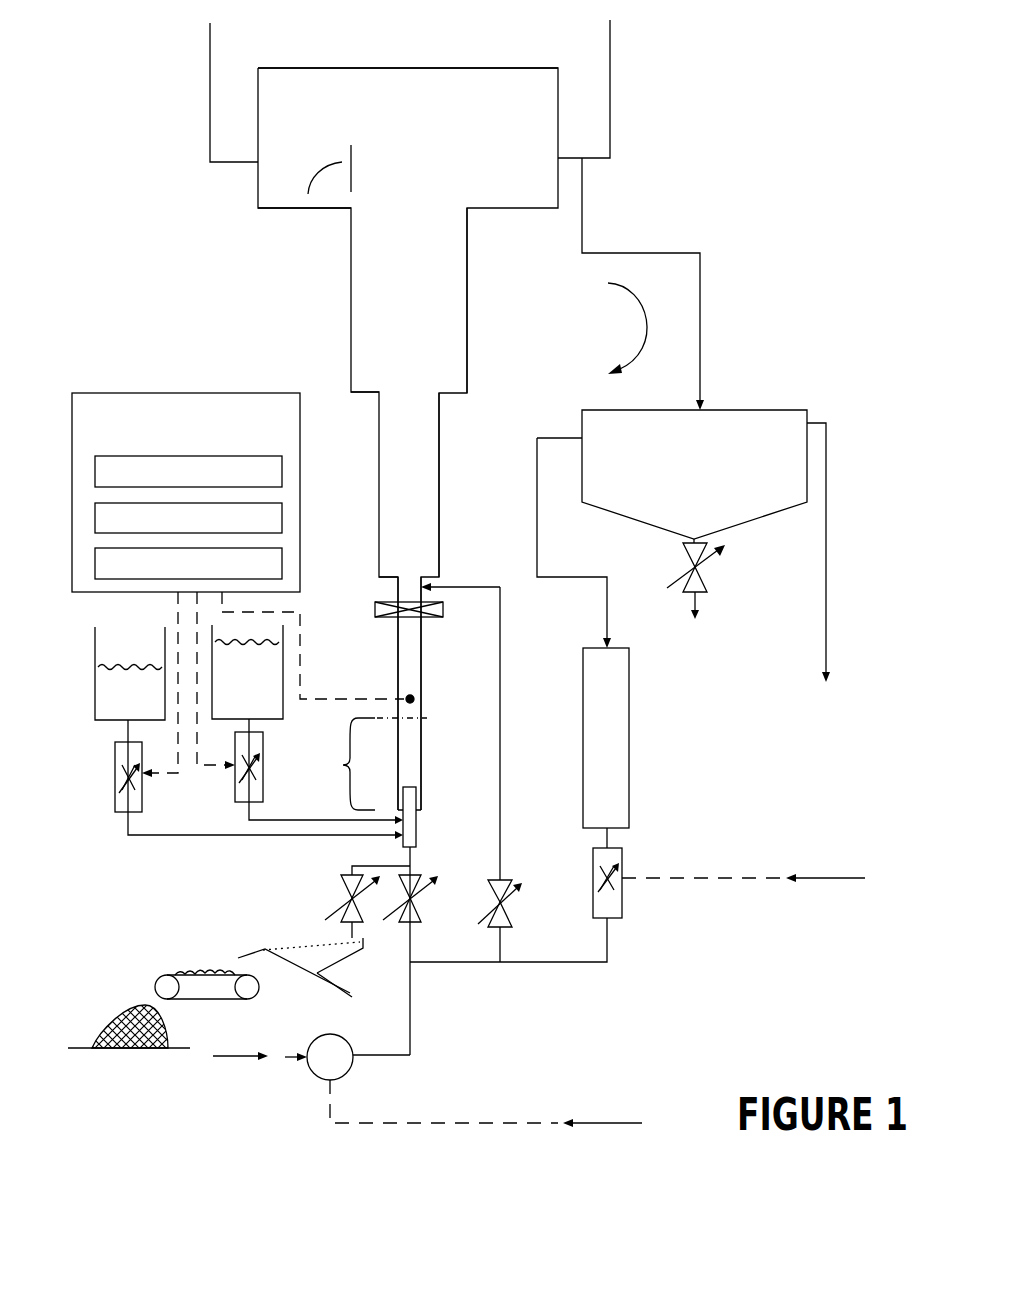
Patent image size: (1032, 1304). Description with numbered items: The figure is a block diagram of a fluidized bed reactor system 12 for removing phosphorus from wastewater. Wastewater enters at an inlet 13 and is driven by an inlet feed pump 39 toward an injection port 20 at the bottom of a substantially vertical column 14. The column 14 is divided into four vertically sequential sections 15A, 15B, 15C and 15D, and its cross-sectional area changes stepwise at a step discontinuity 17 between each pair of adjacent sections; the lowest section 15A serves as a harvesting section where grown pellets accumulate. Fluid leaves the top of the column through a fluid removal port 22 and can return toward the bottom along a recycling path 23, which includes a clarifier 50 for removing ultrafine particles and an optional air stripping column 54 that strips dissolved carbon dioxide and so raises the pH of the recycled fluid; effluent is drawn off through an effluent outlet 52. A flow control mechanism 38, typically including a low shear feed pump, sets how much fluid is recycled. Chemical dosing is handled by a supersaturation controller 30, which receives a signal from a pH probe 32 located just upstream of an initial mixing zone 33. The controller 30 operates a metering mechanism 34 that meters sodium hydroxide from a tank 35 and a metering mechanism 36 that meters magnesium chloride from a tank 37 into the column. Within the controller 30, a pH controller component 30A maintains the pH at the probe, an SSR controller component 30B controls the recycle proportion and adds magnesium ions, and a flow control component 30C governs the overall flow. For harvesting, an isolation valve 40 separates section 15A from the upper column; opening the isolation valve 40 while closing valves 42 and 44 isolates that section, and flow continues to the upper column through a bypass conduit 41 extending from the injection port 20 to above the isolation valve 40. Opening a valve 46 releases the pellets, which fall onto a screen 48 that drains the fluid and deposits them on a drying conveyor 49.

The fluidized bed reactor system 12 is at (773, 36).
The vertical column 14 is at (498, 34).
The column section 15D is at (252, 93).
The column section 15C is at (467, 326).
The column section 15B is at (439, 532).
The harvesting section 15A is at (421, 763).
The step discontinuity 17 is at (258, 208).
The fluid removal port 22 is at (582, 162).
The recycling path 23 is at (625, 328).
The clarifier 50 is at (747, 410).
The effluent outlet 52 is at (828, 437).
The air stripping column 54 is at (629, 728).
The supersaturation controller 30 is at (253, 393).
The flow control component 30C is at (282, 470).
The SSR controller component 30B is at (282, 518).
The pH controller component 30A is at (282, 565).
The valve 44 is at (443, 610).
The pH probe 32 is at (410, 695).
The initial mixing zone 33 is at (343, 765).
The sodium hydroxide tank 35 is at (95, 715).
The metering mechanism 34 is at (115, 790).
The metering mechanism 36 is at (235, 790).
The magnesium chloride tank 37 is at (273, 719).
The injection port 20 is at (416, 837).
The bypass conduit 41 is at (500, 770).
The isolation valve 40 is at (512, 900).
The flow control mechanism 38 is at (622, 915).
The valve 42 is at (422, 898).
The valve 46 is at (343, 900).
The screen 48 is at (310, 943).
The drying conveyor 49 is at (233, 1000).
The inlet 13 is at (298, 1057).
The inlet feed pump 39 is at (343, 1065).